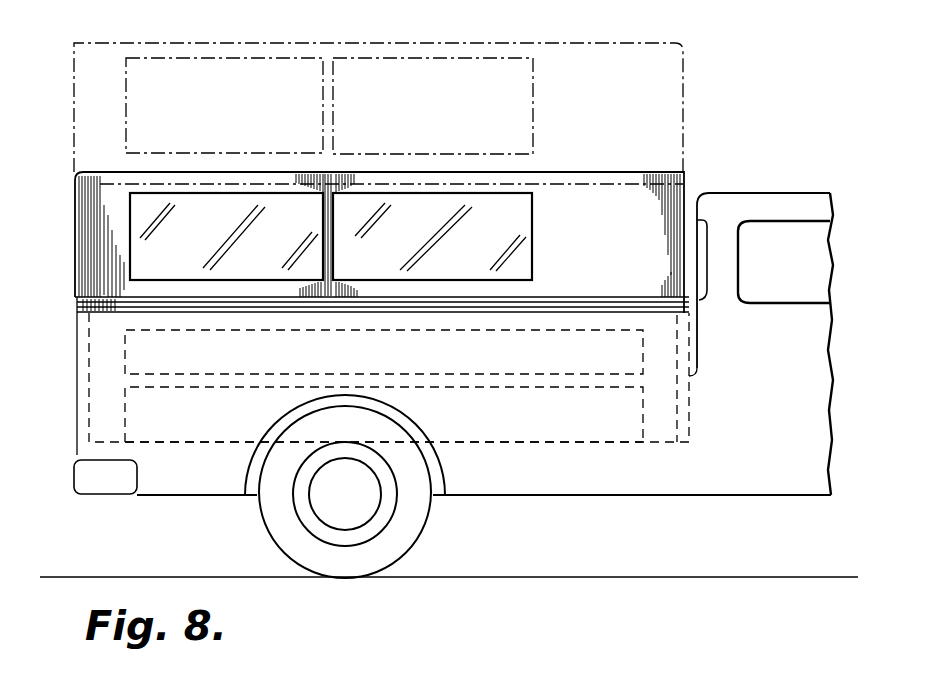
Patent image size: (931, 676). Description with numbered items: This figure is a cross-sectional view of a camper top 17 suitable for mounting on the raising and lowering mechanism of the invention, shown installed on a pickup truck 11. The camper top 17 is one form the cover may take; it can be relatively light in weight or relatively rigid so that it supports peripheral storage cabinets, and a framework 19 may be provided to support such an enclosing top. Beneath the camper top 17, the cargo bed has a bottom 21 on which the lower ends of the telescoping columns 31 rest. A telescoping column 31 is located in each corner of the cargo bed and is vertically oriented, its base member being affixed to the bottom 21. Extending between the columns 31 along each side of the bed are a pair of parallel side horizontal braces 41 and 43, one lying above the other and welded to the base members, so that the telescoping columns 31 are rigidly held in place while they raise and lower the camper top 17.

The pickup truck 11 is at (673, 482).
The camper top 17 is at (665, 89).
The framework 19 is at (97, 300).
The bottom 21 is at (530, 436).
The telescoping column 31 is at (90, 386).
The side horizontal brace 41 is at (340, 328).
The side horizontal brace 43 is at (212, 373).